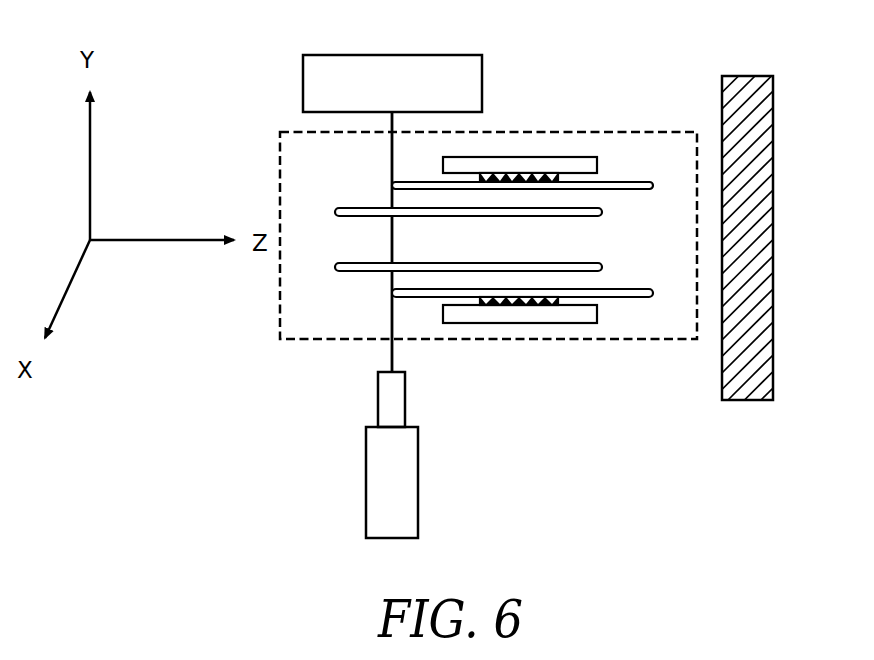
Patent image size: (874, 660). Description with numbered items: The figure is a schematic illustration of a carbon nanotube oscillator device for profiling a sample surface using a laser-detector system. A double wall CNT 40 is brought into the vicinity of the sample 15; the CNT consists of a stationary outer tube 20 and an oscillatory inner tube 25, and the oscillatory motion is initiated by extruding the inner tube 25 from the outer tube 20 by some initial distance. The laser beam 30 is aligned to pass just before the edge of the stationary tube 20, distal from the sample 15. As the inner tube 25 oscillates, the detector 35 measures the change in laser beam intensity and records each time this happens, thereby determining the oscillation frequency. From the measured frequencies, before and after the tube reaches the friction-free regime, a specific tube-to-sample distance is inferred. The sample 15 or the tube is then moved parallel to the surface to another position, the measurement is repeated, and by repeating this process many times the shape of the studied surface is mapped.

The sample 15 is at (773, 175).
The stationary tube 20 is at (618, 182).
The oscillatory inner tube 25 is at (376, 271).
The laser beam 30 is at (418, 467).
The detector 35 is at (482, 76).
The double wall CNT 40 is at (575, 339).